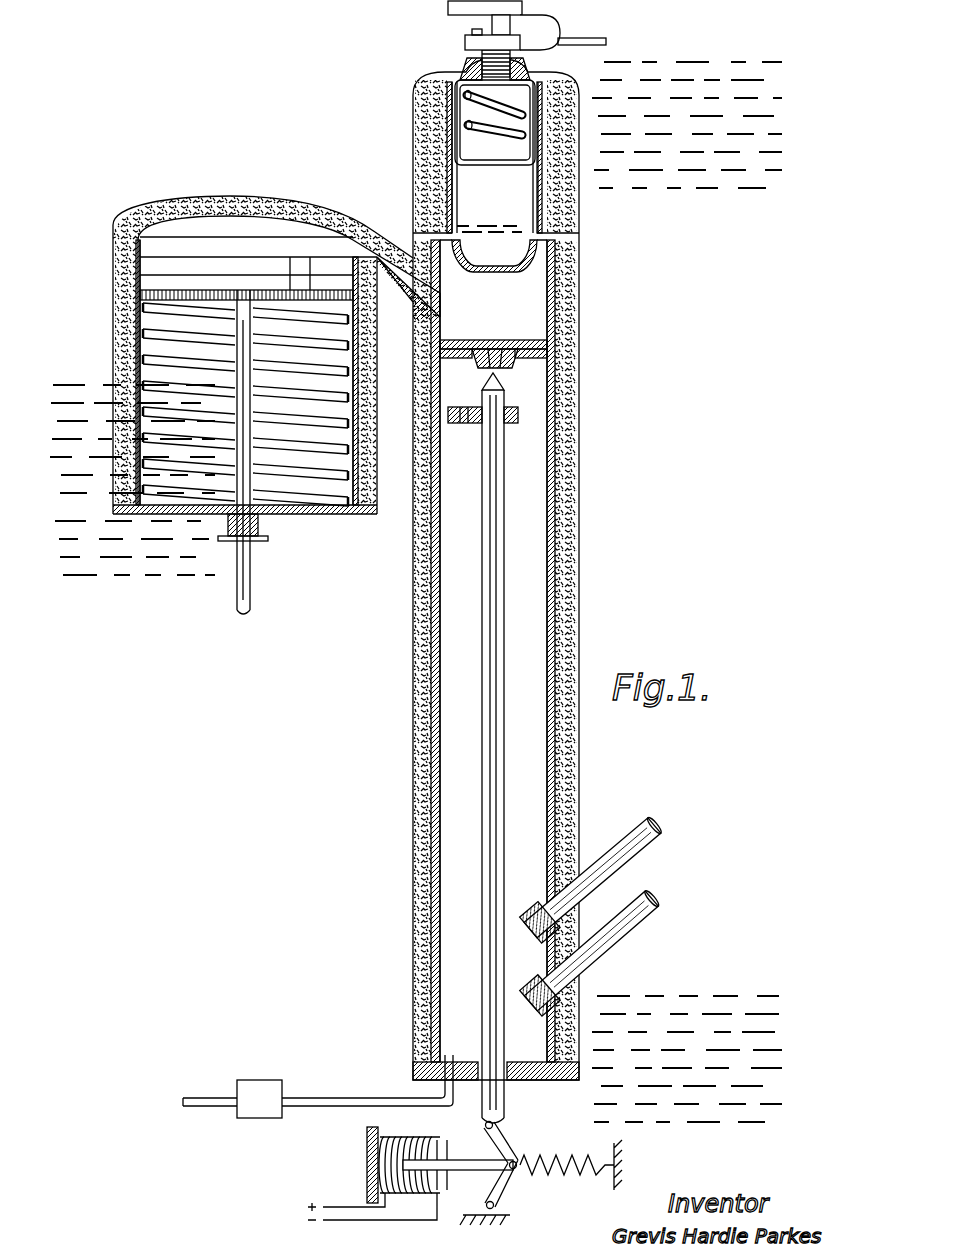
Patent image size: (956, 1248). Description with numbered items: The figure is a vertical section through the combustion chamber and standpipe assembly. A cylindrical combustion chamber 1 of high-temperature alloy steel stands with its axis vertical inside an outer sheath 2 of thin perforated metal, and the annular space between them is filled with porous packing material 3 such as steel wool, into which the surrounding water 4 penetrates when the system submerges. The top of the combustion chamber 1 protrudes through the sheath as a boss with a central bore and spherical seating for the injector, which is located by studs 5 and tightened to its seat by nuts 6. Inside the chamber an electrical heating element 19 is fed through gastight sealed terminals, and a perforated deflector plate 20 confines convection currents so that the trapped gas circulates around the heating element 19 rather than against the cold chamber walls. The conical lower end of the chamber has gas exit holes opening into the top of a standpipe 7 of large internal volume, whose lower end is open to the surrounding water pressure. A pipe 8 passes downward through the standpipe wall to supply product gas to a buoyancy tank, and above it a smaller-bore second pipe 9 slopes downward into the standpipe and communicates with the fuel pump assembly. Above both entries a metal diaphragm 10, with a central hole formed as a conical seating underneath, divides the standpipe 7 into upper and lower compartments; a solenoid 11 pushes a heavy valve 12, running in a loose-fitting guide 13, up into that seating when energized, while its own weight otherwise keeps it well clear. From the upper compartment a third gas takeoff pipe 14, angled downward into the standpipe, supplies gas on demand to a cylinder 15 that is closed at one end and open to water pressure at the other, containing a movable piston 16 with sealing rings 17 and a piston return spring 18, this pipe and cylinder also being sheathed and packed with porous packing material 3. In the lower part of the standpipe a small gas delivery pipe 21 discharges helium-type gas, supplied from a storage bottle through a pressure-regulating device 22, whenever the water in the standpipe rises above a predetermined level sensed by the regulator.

The combustion chamber 1 is at (440, 105).
The outer sheath 2 is at (420, 128).
The porous packing material 3 is at (570, 197).
The surrounding water 4 is at (677, 130).
The studs 5 is at (487, 62).
The nuts 6 is at (478, 33).
The standpipe 7 is at (578, 482).
The pipe 8 is at (640, 928).
The second pipe 9 is at (620, 875).
The diaphragm 10 is at (520, 368).
The solenoid 11 is at (370, 1176).
The valve 12 is at (505, 580).
The guide 13 is at (462, 452).
The third gas takeoff pipe 14 is at (390, 250).
The cylinder 15 is at (143, 352).
The piston 16 is at (142, 297).
The sealing rings 17 is at (320, 290).
The piston return spring 18 is at (128, 395).
The electrical heating element 19 is at (483, 128).
The deflector plate 20 is at (532, 130).
The gas delivery pipe 21 is at (368, 1098).
The pressure-regulating device 22 is at (256, 1095).